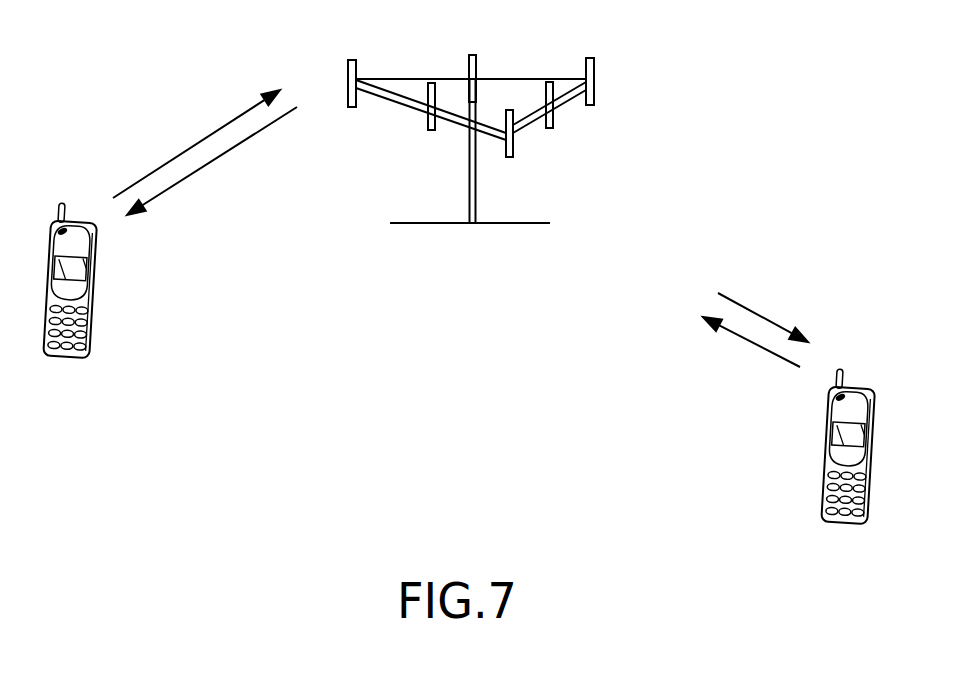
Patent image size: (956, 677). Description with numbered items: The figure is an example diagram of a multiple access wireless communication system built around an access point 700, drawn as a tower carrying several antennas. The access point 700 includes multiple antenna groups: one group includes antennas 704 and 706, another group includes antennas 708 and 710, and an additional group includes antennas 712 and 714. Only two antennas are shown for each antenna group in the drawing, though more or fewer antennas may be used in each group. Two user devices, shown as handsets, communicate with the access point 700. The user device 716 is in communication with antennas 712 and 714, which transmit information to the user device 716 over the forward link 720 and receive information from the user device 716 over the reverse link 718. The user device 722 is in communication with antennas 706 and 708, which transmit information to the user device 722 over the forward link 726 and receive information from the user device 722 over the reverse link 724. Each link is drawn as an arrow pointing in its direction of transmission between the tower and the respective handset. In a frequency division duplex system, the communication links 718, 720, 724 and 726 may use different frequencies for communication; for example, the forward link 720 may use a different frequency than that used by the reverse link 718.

The access point 700 is at (450, 223).
The antenna 704 is at (512, 157).
The antenna 706 is at (548, 128).
The antenna 708 is at (594, 88).
The antenna 710 is at (473, 53).
The antenna 712 is at (357, 70).
The antenna 714 is at (432, 132).
The user device 716 is at (73, 220).
The reverse link 718 is at (198, 142).
The forward link 720 is at (220, 155).
The user device 722 is at (853, 387).
The reverse link 724 is at (743, 333).
The forward link 726 is at (768, 318).